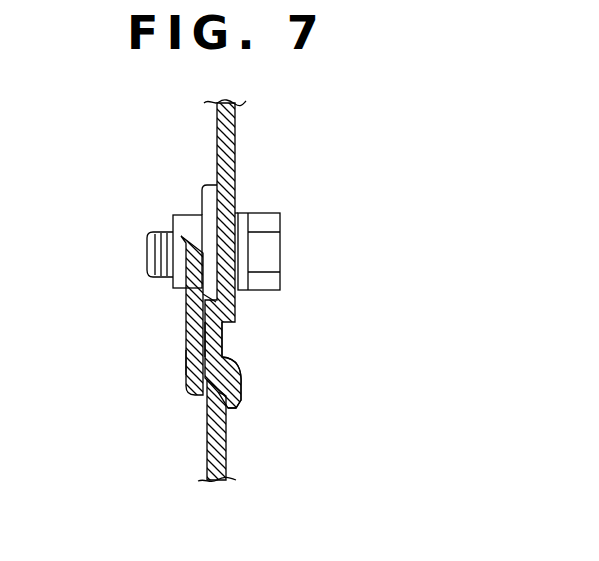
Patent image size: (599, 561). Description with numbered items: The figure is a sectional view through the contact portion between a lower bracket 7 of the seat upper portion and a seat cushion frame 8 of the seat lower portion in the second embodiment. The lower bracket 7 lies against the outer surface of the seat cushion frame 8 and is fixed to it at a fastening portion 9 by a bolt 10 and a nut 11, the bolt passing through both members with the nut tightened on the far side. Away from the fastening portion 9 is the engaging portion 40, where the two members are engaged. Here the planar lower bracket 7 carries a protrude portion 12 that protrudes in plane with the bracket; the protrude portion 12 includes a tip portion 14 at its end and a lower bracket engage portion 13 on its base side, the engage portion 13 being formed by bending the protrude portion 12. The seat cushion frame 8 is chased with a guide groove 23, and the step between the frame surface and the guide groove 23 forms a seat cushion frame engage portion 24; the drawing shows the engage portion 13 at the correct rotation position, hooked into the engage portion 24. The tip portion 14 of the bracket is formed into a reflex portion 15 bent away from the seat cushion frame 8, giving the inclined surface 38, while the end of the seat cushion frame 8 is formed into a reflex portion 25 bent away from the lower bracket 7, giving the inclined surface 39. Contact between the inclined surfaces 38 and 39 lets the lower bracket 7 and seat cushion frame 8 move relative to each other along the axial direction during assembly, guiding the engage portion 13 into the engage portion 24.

The lower bracket 7 is at (235, 126).
The seat cushion frame 8 is at (208, 462).
The fastening portion 9 is at (241, 252).
The bolt 10 is at (280, 268).
The nut 11 is at (175, 218).
The protrude portion 12 is at (284, 372).
The lower bracket engage portion 13 is at (224, 340).
The tip portion 14 is at (240, 378).
The reflex portion 15 is at (270, 403).
The guide groove 23 is at (187, 297).
The seat cushion frame engage portion 24 is at (136, 315).
The reflex portion 25 is at (172, 247).
The inclined surface 38 is at (226, 415).
The inclined surface 39 is at (204, 214).
The engaging portion 40 is at (187, 362).